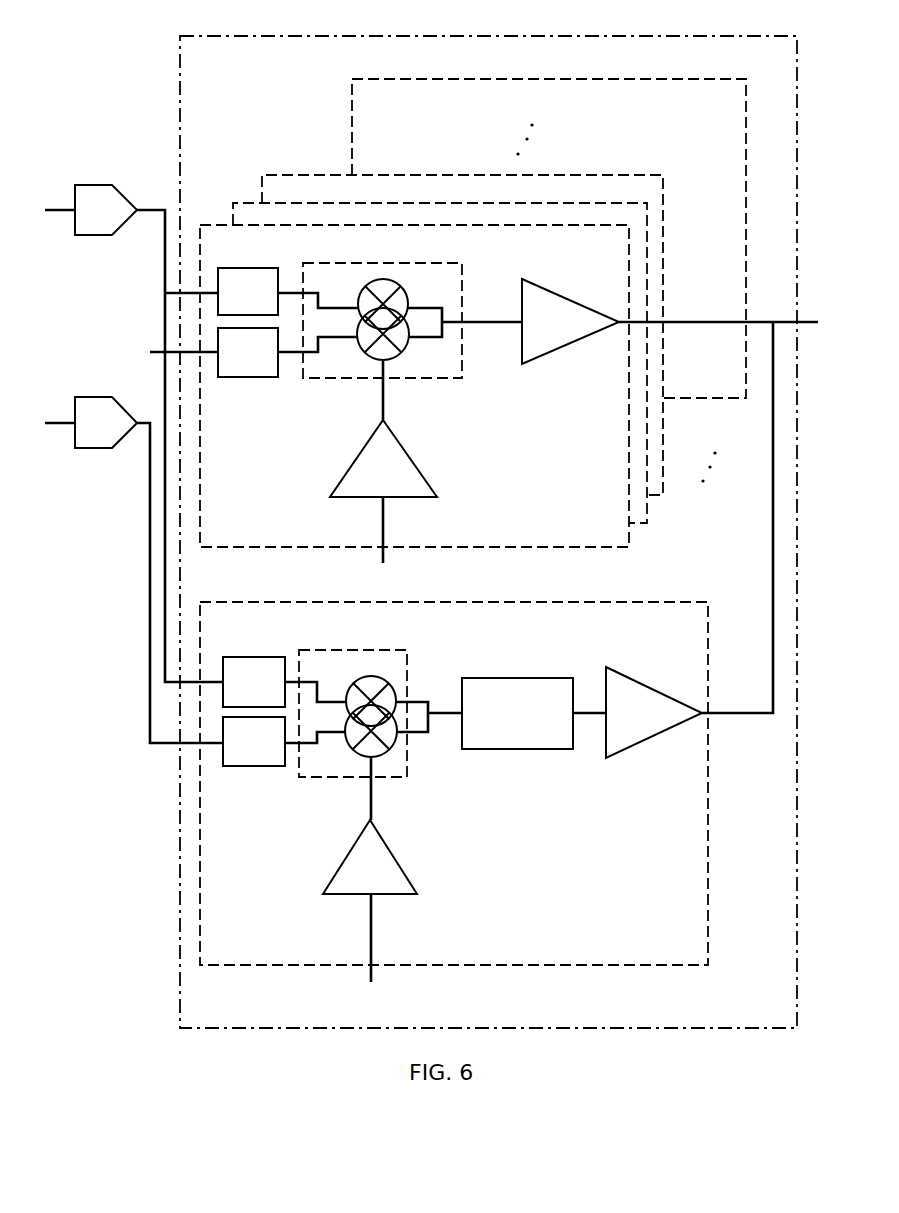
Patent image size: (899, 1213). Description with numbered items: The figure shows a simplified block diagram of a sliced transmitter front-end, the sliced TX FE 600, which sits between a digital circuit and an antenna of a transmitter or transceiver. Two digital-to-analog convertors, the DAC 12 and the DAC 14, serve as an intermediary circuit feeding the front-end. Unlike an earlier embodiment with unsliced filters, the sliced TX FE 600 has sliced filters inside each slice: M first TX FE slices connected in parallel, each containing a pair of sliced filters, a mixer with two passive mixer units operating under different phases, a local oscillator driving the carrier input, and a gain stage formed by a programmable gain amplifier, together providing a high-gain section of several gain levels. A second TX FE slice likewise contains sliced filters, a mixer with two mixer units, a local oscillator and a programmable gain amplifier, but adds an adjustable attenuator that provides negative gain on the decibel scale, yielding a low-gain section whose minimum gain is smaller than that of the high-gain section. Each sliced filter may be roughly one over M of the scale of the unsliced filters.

The sliced TX FE 600 is at (411, 36).
The DAC 12 is at (80, 185).
The DAC 14 is at (80, 397).